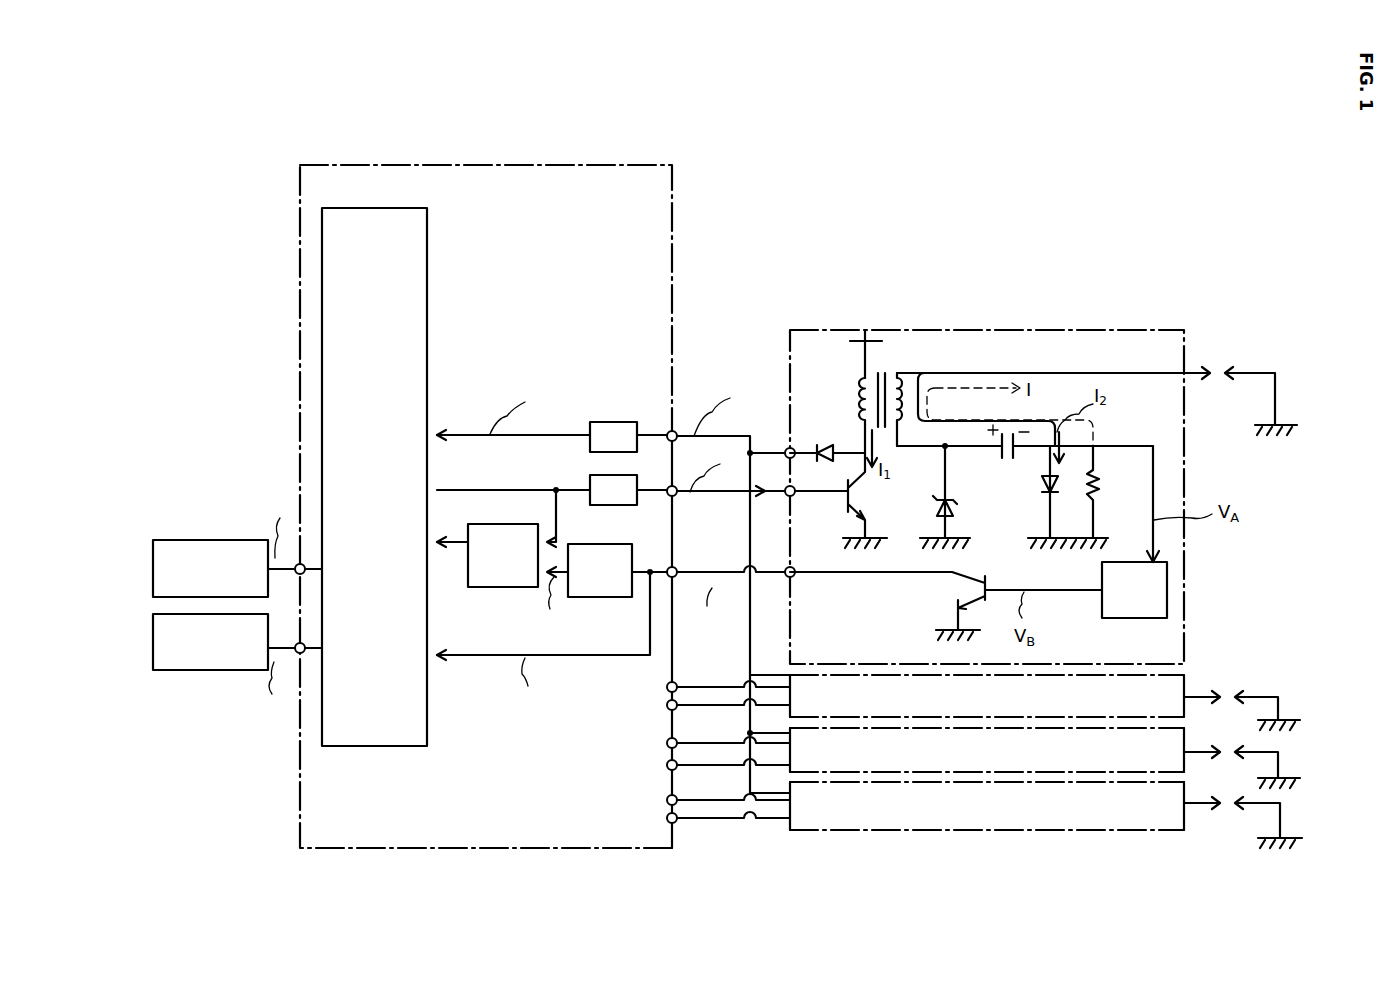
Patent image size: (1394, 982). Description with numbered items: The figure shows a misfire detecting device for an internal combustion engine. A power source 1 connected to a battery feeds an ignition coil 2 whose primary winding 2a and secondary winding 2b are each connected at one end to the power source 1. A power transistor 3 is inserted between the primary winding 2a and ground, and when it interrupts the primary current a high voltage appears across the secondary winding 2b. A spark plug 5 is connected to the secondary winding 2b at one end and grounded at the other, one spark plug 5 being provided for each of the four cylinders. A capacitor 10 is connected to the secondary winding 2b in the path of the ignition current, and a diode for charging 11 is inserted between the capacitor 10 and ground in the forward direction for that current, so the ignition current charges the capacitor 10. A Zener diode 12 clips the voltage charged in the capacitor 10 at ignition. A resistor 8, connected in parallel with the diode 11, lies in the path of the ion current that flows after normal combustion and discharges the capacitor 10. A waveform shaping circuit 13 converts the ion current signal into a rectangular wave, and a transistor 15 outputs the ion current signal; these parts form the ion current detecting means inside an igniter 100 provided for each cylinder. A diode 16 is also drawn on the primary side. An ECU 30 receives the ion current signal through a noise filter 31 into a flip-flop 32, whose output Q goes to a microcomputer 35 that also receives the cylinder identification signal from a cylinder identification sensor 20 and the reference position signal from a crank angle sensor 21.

The power source 1 is at (870, 342).
The ignition coil 2 is at (929, 369).
The primary winding 2a is at (858, 388).
The secondary winding 2b is at (912, 382).
The power transistor 3 is at (860, 501).
The spark plug 5 is at (1222, 364).
The resistor 8 is at (1106, 480).
The capacitor 10 is at (1005, 462).
The diode for charging 11 is at (1076, 466).
The Zener diode 12 is at (956, 512).
The waveform shaping circuit 13 is at (1168, 594).
The transistor 15 is at (948, 588).
The diode 16 is at (828, 468).
The cylinder identification sensor 20 is at (179, 540).
The crank angle sensor 21 is at (188, 670).
The ECU 30 is at (495, 165).
The noise filter 31 is at (601, 598).
The flip-flop 32 is at (485, 588).
The microcomputer 35 is at (366, 200).
The igniter 100 is at (1112, 330).